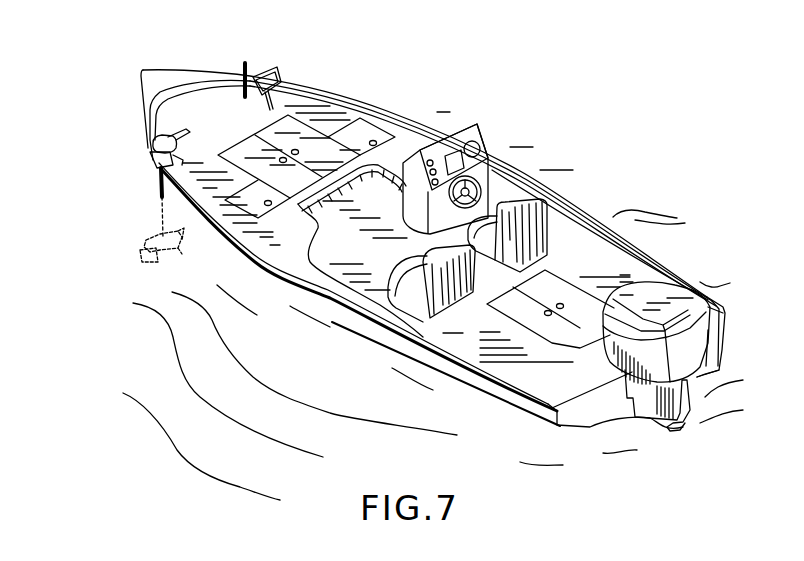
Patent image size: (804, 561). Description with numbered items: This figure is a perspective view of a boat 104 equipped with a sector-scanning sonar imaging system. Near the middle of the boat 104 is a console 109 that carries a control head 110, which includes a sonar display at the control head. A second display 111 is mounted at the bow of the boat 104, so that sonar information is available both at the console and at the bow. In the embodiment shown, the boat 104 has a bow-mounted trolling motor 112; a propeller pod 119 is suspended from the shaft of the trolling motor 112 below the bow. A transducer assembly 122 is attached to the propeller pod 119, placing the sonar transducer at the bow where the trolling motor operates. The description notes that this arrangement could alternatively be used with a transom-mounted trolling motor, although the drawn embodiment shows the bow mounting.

The boat 104 is at (400, 106).
The console 109 is at (484, 134).
The control head 110 is at (455, 145).
The second display 111 is at (283, 76).
The trolling motor 112 is at (150, 143).
The transducer assembly 122 is at (148, 241).
The propeller pod 119 is at (140, 257).